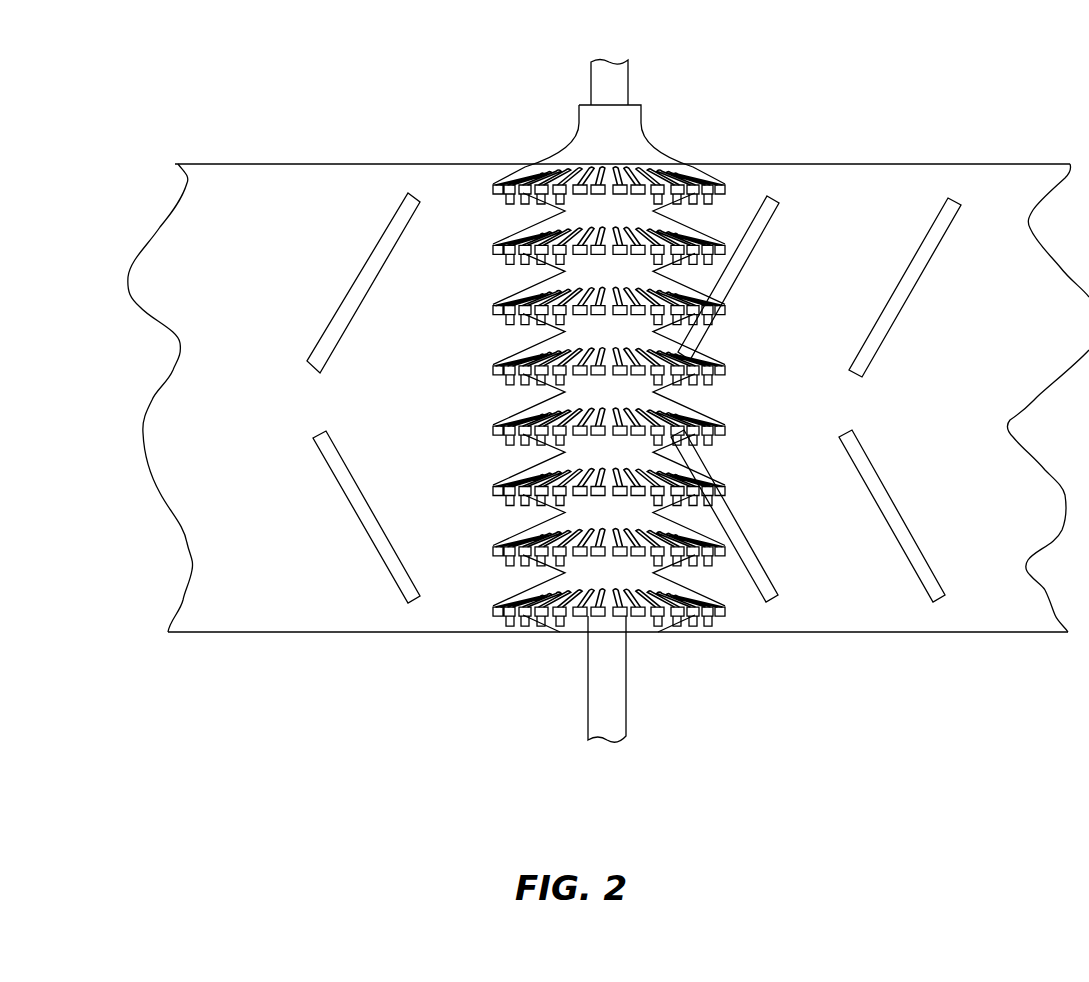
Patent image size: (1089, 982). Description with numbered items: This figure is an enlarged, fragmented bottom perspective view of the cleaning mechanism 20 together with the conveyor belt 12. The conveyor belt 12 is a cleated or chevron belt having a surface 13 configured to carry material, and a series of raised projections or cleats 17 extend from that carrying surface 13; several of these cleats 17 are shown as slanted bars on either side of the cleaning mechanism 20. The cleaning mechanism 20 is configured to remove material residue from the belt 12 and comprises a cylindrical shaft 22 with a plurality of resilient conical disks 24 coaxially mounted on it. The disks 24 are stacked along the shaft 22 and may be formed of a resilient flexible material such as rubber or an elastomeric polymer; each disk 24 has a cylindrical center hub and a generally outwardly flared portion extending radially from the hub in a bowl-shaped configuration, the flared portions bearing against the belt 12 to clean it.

The conveyor belt 12 is at (243, 447).
The surface 13 is at (283, 230).
The cleats 17 is at (343, 320).
The cleaning mechanism 20 is at (638, 377).
The shaft 22 is at (611, 680).
The conical disks 24 is at (612, 570).